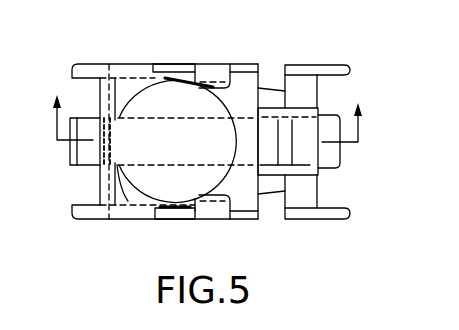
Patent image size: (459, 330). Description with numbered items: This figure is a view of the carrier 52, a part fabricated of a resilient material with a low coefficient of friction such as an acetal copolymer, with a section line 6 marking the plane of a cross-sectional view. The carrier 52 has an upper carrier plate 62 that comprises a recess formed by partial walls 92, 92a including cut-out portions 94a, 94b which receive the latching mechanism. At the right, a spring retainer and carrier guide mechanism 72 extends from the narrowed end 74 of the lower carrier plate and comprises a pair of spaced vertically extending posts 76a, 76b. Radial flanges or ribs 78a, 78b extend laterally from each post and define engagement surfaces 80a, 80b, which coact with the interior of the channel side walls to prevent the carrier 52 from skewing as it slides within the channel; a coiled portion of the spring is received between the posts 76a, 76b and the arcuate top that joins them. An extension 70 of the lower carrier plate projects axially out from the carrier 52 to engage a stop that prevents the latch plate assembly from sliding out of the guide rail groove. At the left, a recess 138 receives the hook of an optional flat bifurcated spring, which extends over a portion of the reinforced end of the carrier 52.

The section line 6 is at (203, 111).
The carrier 52 is at (104, 57).
The upper carrier plate 62 is at (132, 93).
The extension 70 is at (443, 210).
The spring retainer and carrier guide mechanism 72 is at (348, 84).
The narrowed end 74 is at (272, 193).
The post 76a is at (320, 168).
The post 76b is at (345, 117).
The radial flange 78a is at (340, 222).
The radial flange 78b is at (325, 68).
The engagement surface 80a is at (328, 222).
The engagement surface 80b is at (300, 64).
The partial wall 92 is at (167, 214).
The partial wall 92a is at (180, 63).
The cut-out portion 94a is at (208, 220).
The cut-out portion 94b is at (212, 72).
The recess 138 is at (128, 201).